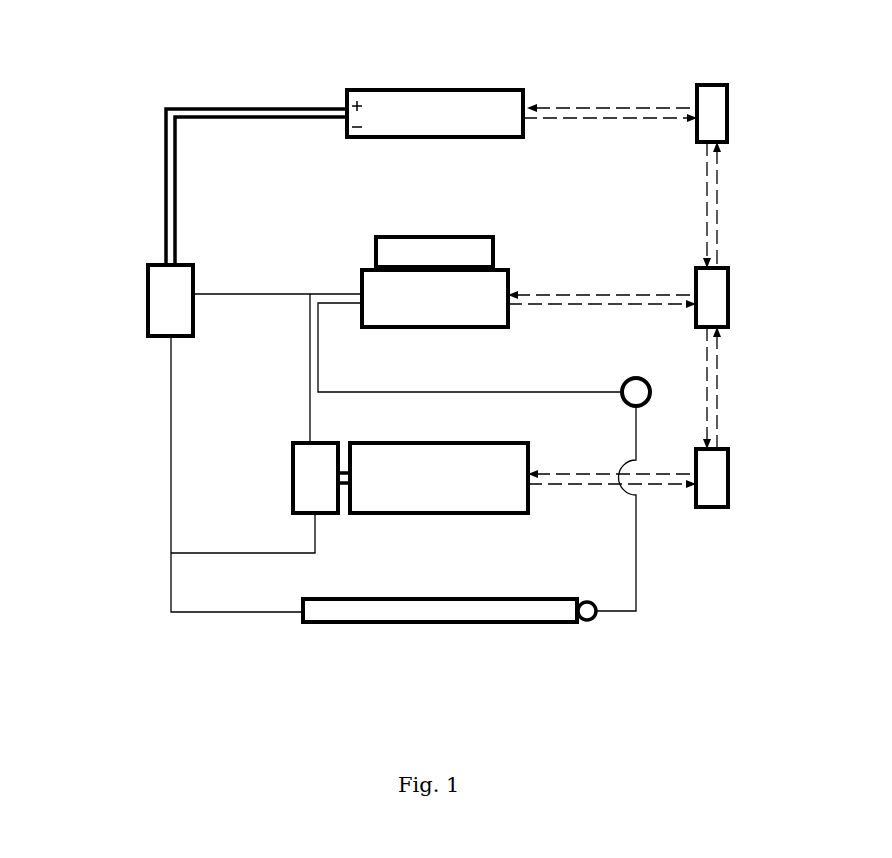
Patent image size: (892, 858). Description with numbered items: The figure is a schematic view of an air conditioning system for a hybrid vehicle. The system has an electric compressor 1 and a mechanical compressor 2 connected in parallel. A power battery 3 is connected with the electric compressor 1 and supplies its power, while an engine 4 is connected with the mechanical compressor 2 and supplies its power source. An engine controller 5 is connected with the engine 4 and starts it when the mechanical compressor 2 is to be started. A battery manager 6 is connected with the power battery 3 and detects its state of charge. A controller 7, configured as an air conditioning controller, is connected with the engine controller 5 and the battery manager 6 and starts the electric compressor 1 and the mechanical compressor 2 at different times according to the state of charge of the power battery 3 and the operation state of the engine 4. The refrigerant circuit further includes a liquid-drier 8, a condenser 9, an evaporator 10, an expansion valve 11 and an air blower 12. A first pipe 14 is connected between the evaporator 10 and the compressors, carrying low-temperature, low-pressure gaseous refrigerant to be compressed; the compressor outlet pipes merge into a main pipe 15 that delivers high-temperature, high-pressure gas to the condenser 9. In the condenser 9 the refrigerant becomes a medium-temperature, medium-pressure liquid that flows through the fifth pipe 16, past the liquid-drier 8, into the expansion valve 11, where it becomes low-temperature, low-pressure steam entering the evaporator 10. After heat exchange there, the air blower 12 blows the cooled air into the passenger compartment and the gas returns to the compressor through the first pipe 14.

The electric compressor 1 is at (173, 299).
The mechanical compressor 2 is at (312, 495).
The power battery 3 is at (410, 113).
The engine 4 is at (492, 490).
The engine controller 5 is at (712, 485).
The battery manager 6 is at (712, 120).
The controller 7 is at (712, 304).
The liquid-drier 8 is at (591, 622).
The condenser 9 is at (337, 610).
The evaporator 10 is at (407, 310).
The expansion valve 11 is at (637, 391).
The air blower 12 is at (458, 253).
The first pipe 14 is at (343, 294).
The main pipe 15 is at (171, 612).
The fifth pipe 16 is at (637, 597).